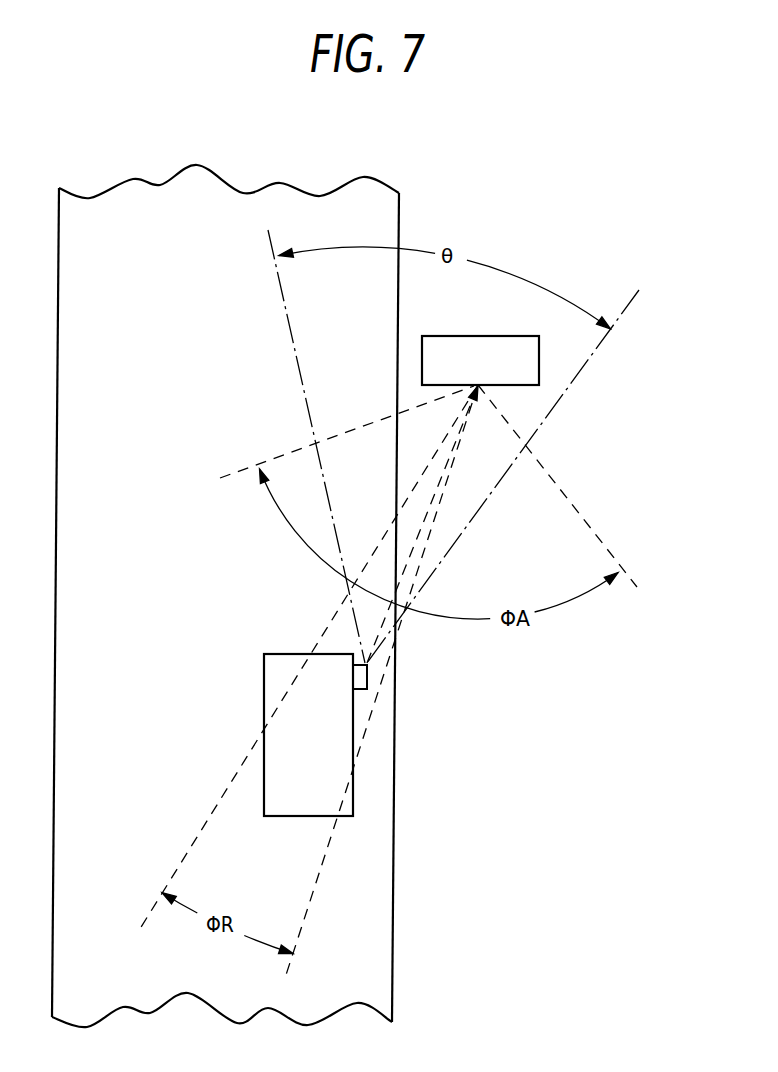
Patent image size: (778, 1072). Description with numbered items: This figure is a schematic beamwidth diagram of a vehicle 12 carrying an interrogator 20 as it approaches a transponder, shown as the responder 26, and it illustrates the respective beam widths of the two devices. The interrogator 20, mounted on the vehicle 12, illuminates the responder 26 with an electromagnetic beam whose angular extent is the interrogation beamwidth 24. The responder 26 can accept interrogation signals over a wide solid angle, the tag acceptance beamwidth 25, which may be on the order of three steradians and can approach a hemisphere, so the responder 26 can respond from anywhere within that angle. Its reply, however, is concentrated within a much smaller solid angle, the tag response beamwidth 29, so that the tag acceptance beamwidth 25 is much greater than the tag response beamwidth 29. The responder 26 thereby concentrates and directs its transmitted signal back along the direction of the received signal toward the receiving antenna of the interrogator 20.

The vehicle 12 is at (264, 672).
The interrogator 20 is at (367, 675).
The interrogation beamwidth 24 is at (563, 397).
The tag acceptance beamwidth 25 is at (350, 430).
The responder 26 is at (462, 336).
The tag response beamwidth 29 is at (215, 810).